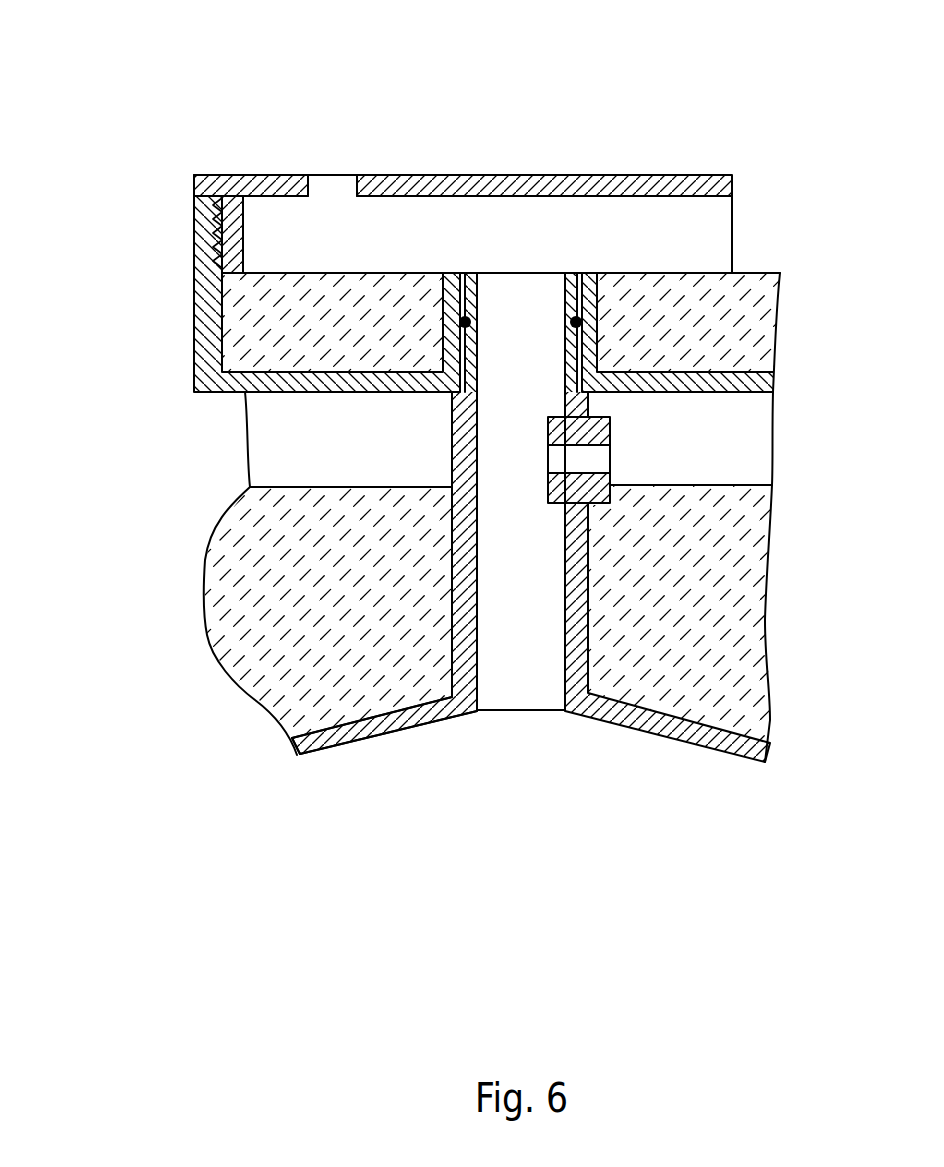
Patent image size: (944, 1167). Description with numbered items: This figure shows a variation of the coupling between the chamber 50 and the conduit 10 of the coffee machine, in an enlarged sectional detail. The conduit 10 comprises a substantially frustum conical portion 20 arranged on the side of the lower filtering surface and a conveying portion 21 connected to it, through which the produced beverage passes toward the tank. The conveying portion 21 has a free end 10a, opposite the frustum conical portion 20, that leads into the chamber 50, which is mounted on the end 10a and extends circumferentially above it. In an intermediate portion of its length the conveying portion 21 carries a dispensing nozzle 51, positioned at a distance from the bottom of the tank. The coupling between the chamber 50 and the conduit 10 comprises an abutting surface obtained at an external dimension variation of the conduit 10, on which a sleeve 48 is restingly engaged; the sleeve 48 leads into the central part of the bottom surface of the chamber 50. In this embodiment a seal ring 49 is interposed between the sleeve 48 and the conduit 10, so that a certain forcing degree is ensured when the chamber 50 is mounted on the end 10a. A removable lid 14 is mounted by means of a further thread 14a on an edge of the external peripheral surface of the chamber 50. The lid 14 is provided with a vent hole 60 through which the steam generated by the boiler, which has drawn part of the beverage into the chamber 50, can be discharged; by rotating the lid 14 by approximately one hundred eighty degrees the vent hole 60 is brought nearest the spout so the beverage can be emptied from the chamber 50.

The conduit 10 is at (530, 697).
The end 10a is at (582, 273).
The removable lid 14 is at (698, 175).
The further thread 14a is at (194, 223).
The frustum conical portion 20 is at (333, 744).
The conveying portion 21 is at (463, 553).
The sleeve 48 is at (452, 273).
The seal ring 49 is at (469, 322).
The chamber 50 is at (194, 352).
The dispensing nozzle 51 is at (660, 448).
The vent hole 60 is at (353, 182).